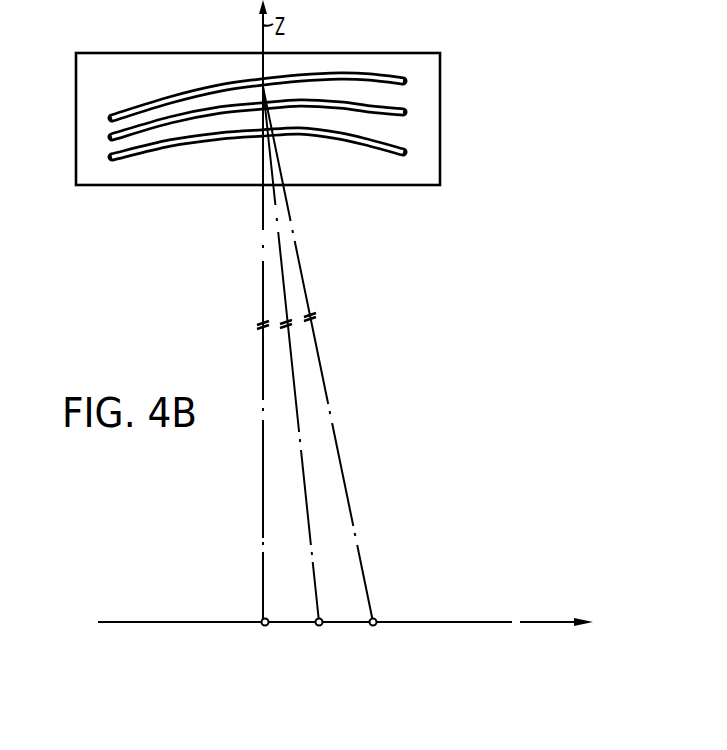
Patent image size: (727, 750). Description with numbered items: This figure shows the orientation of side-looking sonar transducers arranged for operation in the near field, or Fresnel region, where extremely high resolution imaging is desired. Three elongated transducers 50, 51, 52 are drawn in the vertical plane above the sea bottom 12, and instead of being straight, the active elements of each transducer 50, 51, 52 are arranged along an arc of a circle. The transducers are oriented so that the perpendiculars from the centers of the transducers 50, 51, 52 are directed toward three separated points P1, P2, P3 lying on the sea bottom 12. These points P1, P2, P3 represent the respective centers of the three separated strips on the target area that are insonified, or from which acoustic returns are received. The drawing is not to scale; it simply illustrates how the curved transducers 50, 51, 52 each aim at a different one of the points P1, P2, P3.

The sea bottom 12 is at (167, 620).
The transducer 50 is at (407, 142).
The transducer 51 is at (407, 99).
The transducer 52 is at (407, 68).
The point P1 is at (262, 617).
The point P2 is at (316, 617).
The point P3 is at (377, 617).